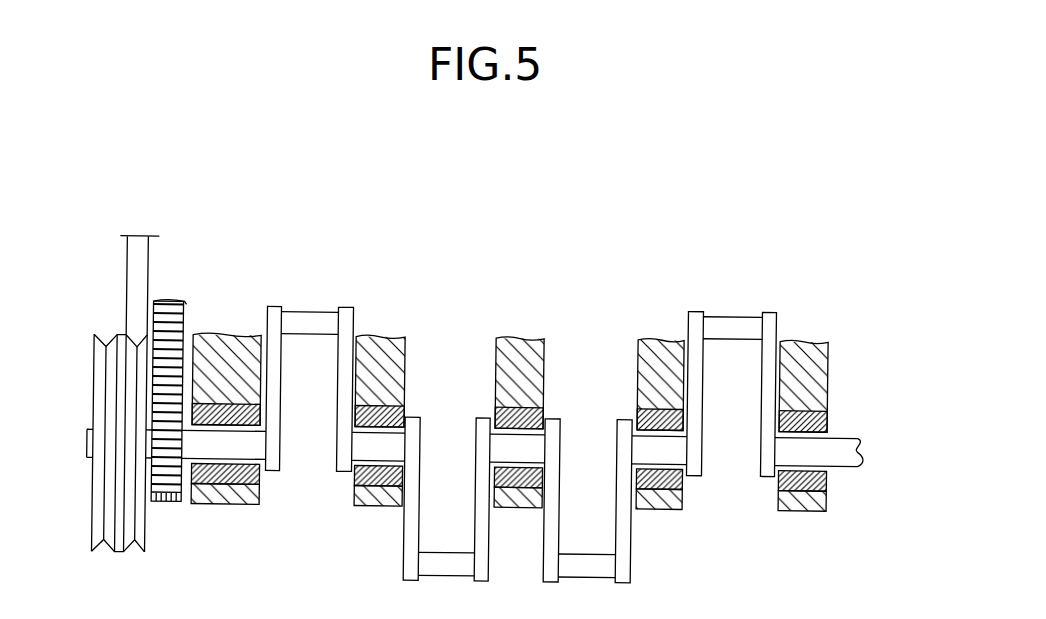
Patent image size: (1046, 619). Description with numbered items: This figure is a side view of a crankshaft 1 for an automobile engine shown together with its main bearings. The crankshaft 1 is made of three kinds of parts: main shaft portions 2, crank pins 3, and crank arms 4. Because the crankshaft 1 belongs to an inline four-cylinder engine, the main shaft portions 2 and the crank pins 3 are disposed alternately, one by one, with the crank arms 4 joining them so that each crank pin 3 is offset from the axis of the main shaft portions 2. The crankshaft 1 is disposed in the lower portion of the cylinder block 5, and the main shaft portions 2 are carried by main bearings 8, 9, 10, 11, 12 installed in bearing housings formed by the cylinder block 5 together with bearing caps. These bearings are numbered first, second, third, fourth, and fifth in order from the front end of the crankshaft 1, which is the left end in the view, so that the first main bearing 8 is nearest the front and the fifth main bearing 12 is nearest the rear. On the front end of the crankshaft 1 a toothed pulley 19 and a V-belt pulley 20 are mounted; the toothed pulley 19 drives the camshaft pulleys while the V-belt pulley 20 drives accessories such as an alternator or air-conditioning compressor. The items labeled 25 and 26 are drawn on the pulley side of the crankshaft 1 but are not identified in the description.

The crankshaft 1 is at (867, 431).
The main shaft portion 2 is at (249, 449).
The crank pin 3 is at (307, 310).
The crank arm 4 is at (265, 318).
The cylinder block 5 is at (827, 365).
The first main bearing 8 is at (230, 484).
The second main bearing 9 is at (380, 494).
The third main bearing 10 is at (530, 483).
The fourth main bearing 11 is at (663, 486).
The fifth main bearing 12 is at (803, 485).
The toothed pulley 19 is at (167, 490).
The V-belt pulley 20 is at (93, 524).
The timing gear 25 is at (182, 318).
The pulley boss 26 is at (125, 268).